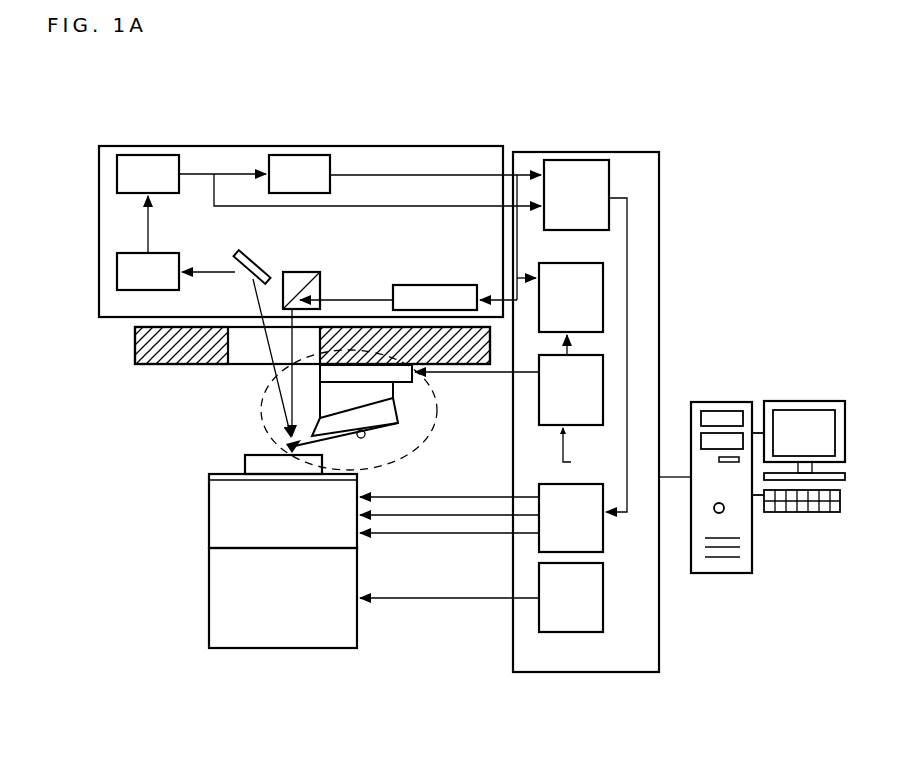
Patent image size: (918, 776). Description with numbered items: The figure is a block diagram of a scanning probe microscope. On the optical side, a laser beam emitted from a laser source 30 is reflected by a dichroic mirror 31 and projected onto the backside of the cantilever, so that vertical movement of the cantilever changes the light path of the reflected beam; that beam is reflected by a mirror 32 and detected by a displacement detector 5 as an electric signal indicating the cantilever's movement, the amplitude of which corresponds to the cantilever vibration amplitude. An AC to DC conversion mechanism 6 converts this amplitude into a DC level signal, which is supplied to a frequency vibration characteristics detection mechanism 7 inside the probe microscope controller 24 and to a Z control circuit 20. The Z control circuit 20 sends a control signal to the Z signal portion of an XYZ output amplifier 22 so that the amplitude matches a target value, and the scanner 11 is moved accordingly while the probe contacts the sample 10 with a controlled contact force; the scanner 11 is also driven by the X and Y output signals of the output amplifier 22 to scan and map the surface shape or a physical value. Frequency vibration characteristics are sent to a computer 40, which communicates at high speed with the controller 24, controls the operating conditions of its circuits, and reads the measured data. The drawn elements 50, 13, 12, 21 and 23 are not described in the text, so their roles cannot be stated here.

The displacement detector 5 is at (145, 276).
The signal processing circuit 50 is at (127, 165).
The AC to DC conversion mechanism 6 is at (290, 163).
The laser source 30 is at (398, 297).
The dichroic mirror 31 is at (298, 279).
The mirror 32 is at (243, 253).
The stage 13 is at (148, 365).
The sample 10 is at (245, 465).
The scanner 11 is at (225, 505).
The Z scanner 12 is at (225, 587).
The Z control circuit 20 is at (571, 165).
The frequency vibration characteristics detection mechanism 7 is at (590, 303).
The drive circuit 21 is at (590, 378).
The XYZ output amplifier 22 is at (598, 525).
The Z drive circuit 23 is at (562, 624).
The probe microscope controller 24 is at (659, 192).
The computer 40 is at (729, 380).